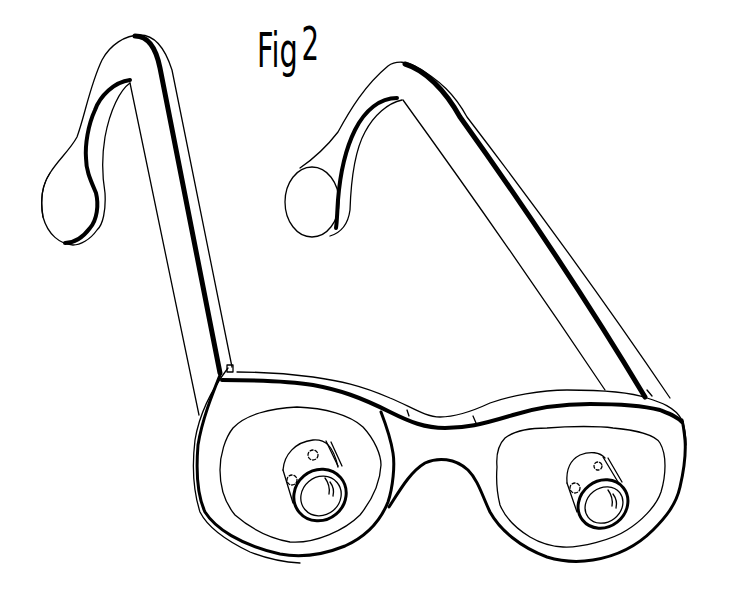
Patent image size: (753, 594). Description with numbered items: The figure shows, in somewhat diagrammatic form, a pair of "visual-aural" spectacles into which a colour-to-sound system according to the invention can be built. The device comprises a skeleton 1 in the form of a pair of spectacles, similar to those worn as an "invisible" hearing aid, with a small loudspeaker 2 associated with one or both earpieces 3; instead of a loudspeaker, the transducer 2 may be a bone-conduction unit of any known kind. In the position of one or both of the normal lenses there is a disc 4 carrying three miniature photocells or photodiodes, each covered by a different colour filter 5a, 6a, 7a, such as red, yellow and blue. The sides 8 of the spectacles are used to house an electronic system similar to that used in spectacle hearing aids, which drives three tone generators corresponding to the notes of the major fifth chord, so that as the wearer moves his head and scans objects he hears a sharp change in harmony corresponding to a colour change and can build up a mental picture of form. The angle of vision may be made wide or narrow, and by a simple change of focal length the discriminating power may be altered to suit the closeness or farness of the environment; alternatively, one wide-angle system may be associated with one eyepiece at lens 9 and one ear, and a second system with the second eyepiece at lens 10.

The skeleton 1 is at (436, 418).
The loudspeaker 2 is at (90, 233).
The earpieces 3 is at (87, 142).
The disc 4 is at (233, 468).
The colour filter 5a is at (312, 450).
The colour filter 6a is at (288, 481).
The colour filter 7a is at (337, 458).
The sides 8 is at (205, 263).
The lens 9 is at (333, 490).
The lens 10 is at (610, 495).